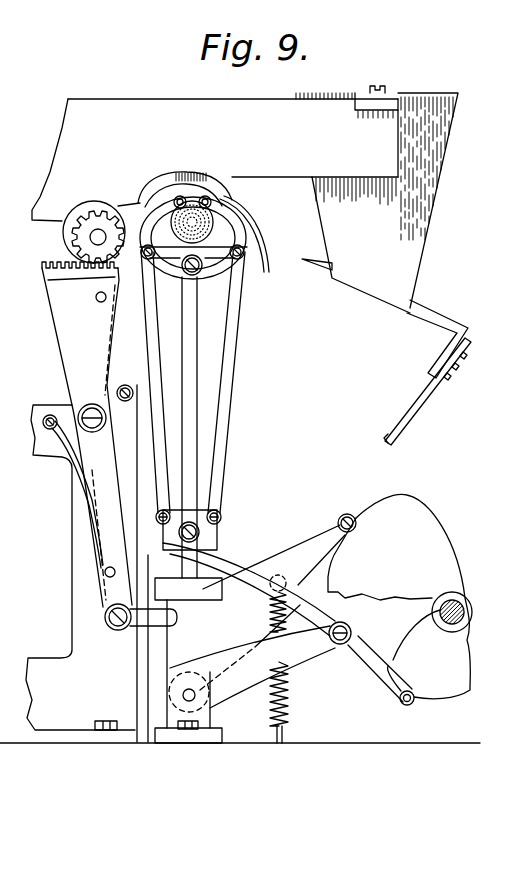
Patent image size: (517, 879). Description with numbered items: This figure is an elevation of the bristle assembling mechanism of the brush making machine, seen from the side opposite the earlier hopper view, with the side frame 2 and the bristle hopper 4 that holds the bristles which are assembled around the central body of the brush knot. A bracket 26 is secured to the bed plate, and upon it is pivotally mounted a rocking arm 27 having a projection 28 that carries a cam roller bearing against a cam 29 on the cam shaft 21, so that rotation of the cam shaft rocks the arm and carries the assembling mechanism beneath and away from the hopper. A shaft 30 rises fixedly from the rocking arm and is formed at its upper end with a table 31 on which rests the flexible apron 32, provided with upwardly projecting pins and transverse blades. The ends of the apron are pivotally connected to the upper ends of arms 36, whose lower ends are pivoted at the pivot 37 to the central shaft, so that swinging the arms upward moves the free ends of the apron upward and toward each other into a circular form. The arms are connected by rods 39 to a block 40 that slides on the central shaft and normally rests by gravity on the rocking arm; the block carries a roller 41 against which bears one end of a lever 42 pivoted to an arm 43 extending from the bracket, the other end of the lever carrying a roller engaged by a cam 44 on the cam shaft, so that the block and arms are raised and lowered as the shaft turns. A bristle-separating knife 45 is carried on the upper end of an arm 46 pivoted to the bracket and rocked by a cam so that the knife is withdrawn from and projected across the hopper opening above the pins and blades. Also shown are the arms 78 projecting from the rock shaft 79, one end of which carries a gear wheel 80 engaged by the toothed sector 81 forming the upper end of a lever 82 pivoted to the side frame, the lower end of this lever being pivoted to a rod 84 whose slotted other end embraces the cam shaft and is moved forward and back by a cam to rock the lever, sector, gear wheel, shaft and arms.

The side frame 2 is at (150, 113).
The bristle hopper 4 is at (428, 180).
The cam shaft 21 is at (472, 610).
The bracket 26 is at (202, 722).
The rocking arm 27 is at (148, 672).
The projection 28 is at (302, 553).
The cam 29 is at (418, 521).
The shaft 30 is at (185, 405).
The table 31 is at (218, 258).
The flexible apron 32 is at (210, 212).
The arms 36 is at (233, 224).
The pivot 37 is at (198, 275).
The rods 39 is at (152, 368).
The block 40 is at (217, 530).
The roller 41 is at (168, 536).
The lever 42 is at (370, 672).
The arm 43 is at (307, 648).
The cam 44 is at (457, 695).
The bristle-separating knife 45 is at (432, 308).
The arm 46 is at (422, 405).
The arms 78 is at (190, 197).
The rock shaft 79 is at (98, 229).
The gear wheel 80 is at (78, 238).
The toothed sector 81 is at (66, 322).
The lever 82 is at (100, 497).
The rod 84 is at (143, 620).